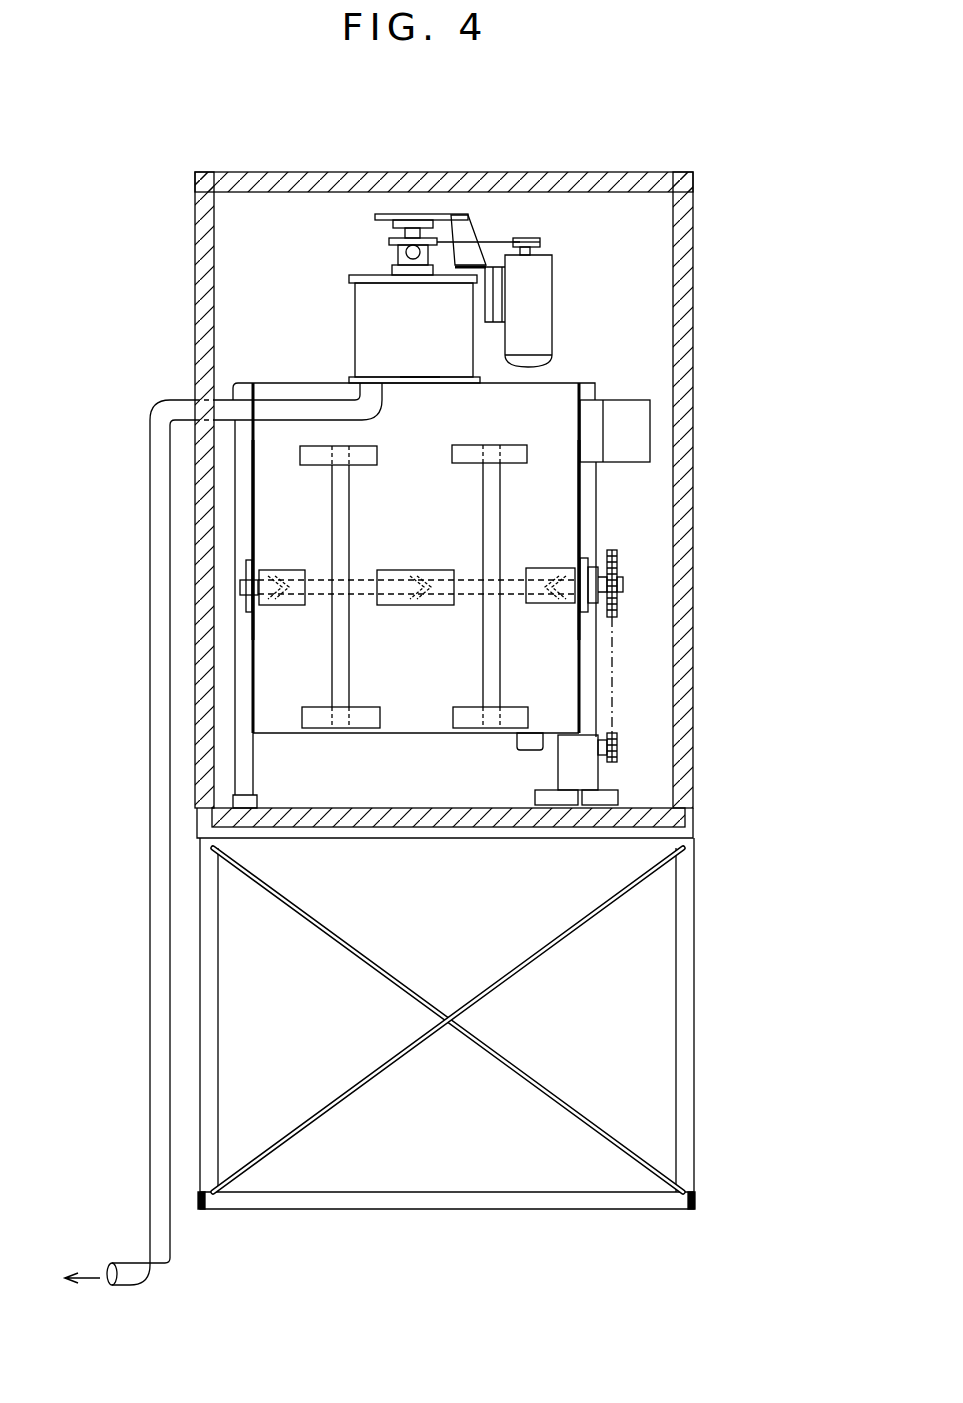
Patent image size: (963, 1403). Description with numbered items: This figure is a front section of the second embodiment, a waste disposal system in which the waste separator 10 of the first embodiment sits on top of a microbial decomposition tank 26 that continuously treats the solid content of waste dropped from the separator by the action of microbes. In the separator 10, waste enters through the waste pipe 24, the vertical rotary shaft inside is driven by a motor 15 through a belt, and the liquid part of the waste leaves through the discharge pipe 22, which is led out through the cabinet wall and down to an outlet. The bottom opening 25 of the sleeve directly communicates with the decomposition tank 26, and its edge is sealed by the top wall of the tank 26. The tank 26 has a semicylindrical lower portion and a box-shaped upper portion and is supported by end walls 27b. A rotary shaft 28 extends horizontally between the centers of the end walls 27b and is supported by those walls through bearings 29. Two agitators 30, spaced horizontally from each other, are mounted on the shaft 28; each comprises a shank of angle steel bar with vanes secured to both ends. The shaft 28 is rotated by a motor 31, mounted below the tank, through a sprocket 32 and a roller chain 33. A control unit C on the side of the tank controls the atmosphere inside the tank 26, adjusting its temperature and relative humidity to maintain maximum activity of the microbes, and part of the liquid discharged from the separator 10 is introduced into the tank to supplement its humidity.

The discharge pipe 22 is at (162, 412).
The waste pipe 24 is at (405, 256).
The waste separator 10 is at (430, 329).
The motor 15 is at (541, 329).
The control unit C is at (626, 420).
The bottom opening 25 is at (418, 386).
The microbial decomposition tank 26 is at (430, 649).
The end walls 27b is at (254, 504).
The rotary shaft 28 is at (365, 583).
The bearings 29 is at (592, 568).
The agitators 30 is at (365, 466).
The motor 31 is at (590, 773).
The sprocket 32 is at (613, 617).
The roller chain 33 is at (617, 660).